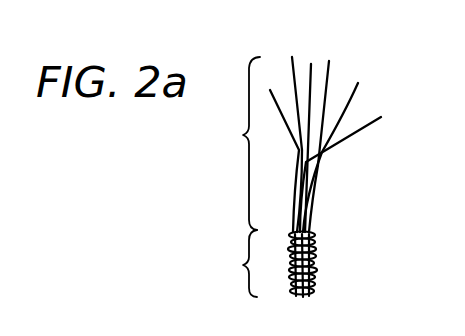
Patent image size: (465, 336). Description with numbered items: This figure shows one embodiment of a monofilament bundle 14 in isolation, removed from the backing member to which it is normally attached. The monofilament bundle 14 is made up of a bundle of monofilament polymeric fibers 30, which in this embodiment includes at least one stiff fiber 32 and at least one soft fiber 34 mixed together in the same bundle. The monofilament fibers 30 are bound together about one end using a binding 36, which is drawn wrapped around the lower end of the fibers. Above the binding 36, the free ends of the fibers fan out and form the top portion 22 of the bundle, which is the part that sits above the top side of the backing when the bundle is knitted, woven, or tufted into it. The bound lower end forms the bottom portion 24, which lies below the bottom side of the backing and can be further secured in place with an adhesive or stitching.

The monofilament bundle 14 is at (392, 172).
The top portion 22 is at (237, 143).
The bottom portion 24 is at (235, 263).
The monofilament polymeric fibers 30 is at (343, 65).
The stiff fiber 32 is at (311, 64).
The soft fiber 34 is at (366, 125).
The binding 36 is at (318, 257).